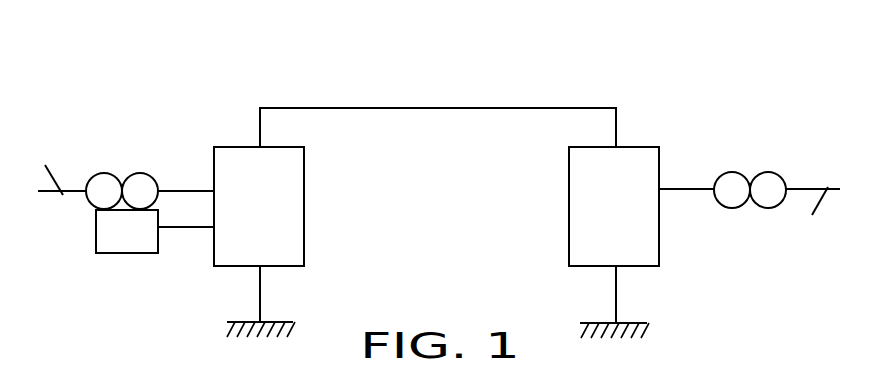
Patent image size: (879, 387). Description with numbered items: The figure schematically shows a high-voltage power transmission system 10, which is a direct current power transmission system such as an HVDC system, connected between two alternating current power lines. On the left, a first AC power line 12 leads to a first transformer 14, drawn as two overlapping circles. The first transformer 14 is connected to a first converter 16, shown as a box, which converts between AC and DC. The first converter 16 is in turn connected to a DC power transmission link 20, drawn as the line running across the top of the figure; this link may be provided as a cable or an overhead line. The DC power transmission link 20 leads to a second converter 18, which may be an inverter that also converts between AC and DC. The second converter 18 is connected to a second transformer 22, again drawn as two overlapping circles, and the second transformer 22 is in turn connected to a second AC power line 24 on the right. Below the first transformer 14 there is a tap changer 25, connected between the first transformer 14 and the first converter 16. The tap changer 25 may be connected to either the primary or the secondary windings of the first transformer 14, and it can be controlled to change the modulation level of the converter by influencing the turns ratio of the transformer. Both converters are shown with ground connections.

The high-voltage power transmission system 10 is at (302, 81).
The first AC power line 12 is at (62, 162).
The first transformer 14 is at (132, 172).
The first converter 16 is at (305, 218).
The second converter 18 is at (572, 208).
The DC power transmission link 20 is at (485, 108).
The second transformer 22 is at (745, 173).
The second AC power line 24 is at (804, 222).
The tap changer 25 is at (155, 231).